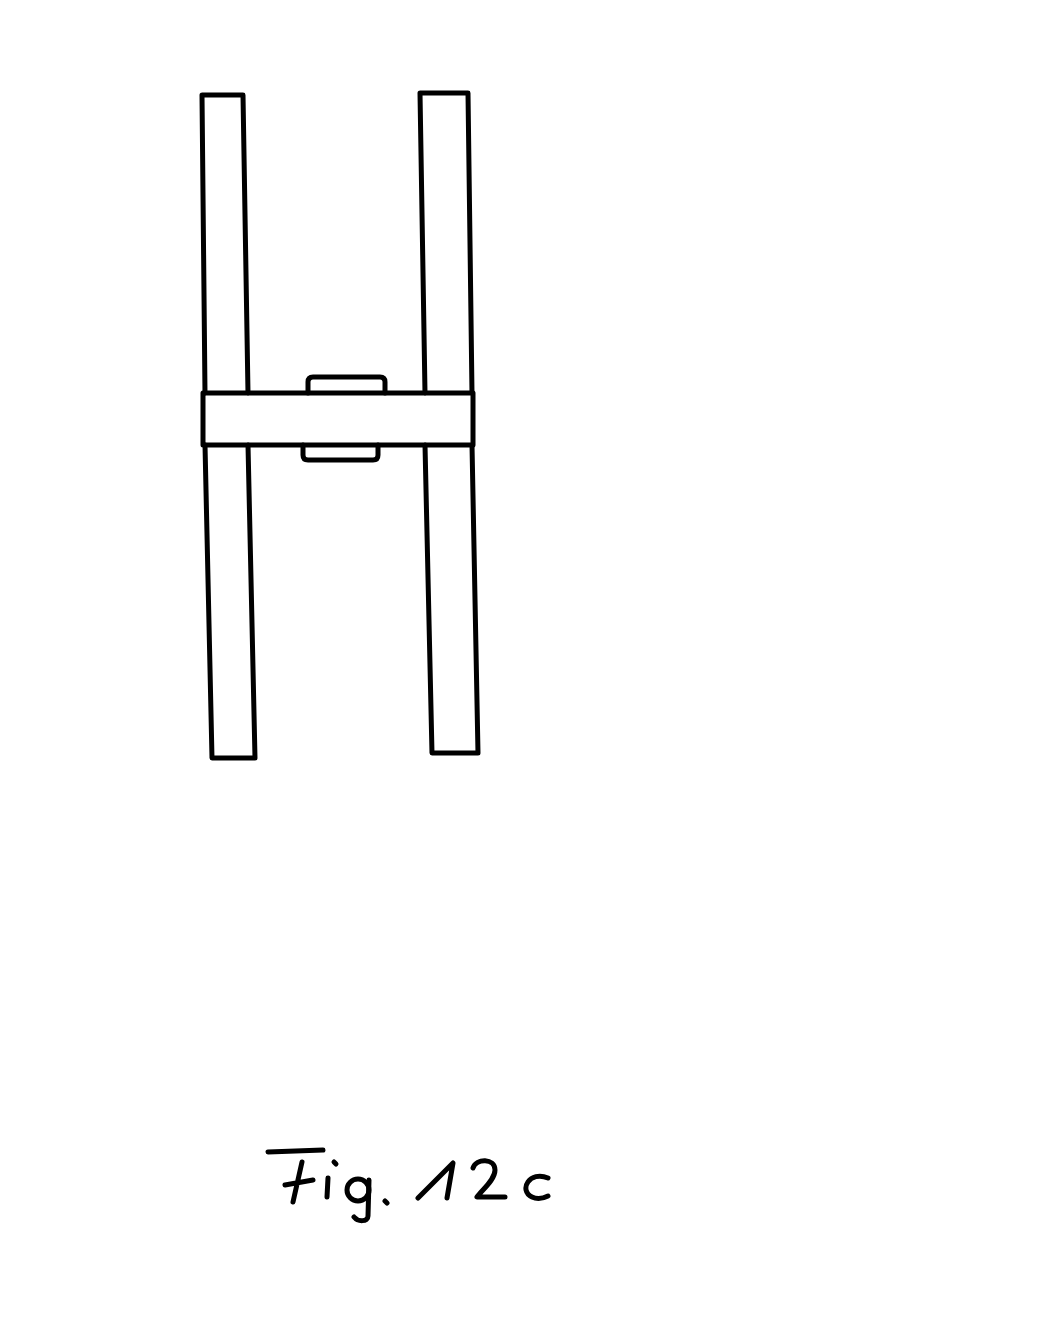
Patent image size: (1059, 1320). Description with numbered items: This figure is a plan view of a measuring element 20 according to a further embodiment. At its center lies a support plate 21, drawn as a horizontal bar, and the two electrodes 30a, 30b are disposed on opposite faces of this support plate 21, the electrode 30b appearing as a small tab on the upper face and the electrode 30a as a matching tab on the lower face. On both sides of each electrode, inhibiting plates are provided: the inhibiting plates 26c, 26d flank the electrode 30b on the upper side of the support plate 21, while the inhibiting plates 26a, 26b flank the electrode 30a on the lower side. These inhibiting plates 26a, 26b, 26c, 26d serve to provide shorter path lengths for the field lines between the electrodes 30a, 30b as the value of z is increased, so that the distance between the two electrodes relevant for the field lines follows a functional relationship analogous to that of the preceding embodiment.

The measuring element 20 is at (896, 13).
The support plate 21 is at (632, 452).
The inhibiting plate 26a is at (228, 662).
The inhibiting plate 26b is at (463, 705).
The inhibiting plate 26c is at (450, 163).
The inhibiting plate 26d is at (217, 262).
The electrode 30a is at (347, 462).
The electrode 30b is at (711, 304).